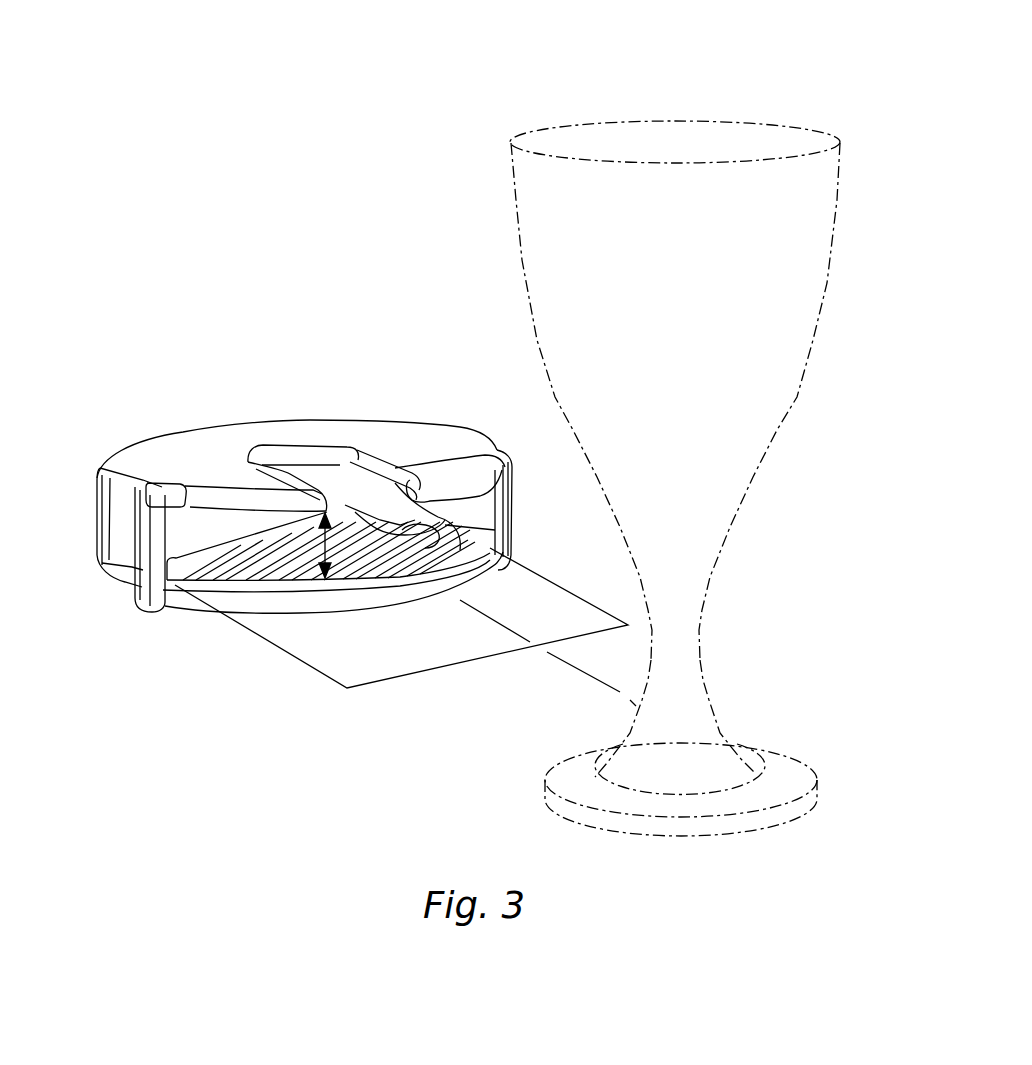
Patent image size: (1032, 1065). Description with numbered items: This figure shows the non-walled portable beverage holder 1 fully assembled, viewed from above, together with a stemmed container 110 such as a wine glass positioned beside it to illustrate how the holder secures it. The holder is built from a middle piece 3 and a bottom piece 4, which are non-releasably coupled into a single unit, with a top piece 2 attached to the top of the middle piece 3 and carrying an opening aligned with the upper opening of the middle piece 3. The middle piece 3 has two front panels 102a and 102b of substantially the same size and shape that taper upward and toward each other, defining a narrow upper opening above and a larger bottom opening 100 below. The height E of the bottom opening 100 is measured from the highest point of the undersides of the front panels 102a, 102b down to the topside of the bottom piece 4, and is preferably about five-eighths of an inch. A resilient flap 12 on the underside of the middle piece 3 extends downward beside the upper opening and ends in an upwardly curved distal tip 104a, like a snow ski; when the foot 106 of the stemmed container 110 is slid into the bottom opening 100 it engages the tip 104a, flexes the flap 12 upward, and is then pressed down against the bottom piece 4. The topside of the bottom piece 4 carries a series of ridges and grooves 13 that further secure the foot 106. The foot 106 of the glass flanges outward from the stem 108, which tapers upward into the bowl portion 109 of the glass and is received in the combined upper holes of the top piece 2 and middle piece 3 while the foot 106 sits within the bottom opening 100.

The non-walled portable beverage holder 1 is at (332, 553).
The top piece 2 is at (475, 437).
The middle piece 3 is at (500, 492).
The bottom piece 4 is at (488, 562).
The flap 12 is at (390, 503).
The ridges and grooves 13 is at (362, 563).
The bottom opening 100 is at (433, 668).
The front panel 102a is at (215, 518).
The front panel 102b is at (457, 510).
The distal tip 104a is at (447, 527).
The foot 106 is at (684, 813).
The stem 108 is at (702, 641).
The glass bowl 109 is at (763, 303).
The stemmed container 110 is at (707, 471).
The height of the bottom opening E is at (313, 522).